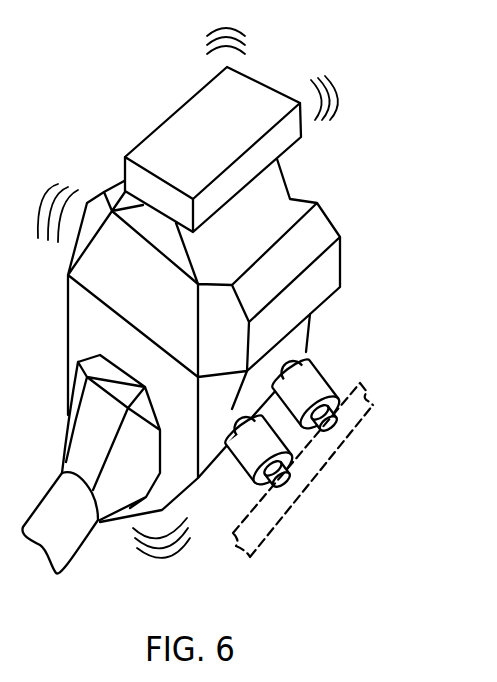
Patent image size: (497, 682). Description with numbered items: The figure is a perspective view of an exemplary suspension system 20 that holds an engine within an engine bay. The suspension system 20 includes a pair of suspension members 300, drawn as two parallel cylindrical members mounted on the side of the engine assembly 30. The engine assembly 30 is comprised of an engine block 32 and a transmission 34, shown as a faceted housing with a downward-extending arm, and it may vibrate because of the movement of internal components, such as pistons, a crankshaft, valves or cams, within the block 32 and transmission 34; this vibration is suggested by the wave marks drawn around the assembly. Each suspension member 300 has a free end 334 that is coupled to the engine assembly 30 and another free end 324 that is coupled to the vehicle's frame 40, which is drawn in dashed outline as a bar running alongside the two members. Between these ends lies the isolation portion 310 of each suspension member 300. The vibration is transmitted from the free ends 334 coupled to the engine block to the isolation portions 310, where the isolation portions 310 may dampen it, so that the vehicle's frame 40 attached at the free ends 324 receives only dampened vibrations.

The suspension system 20 is at (236, 313).
The engine assembly 30 is at (127, 108).
The engine block 32 is at (67, 320).
The transmission 34 is at (80, 547).
The vehicle's frame 40 is at (252, 558).
The suspension member 300 is at (297, 462).
The isolation portion 310 is at (334, 383).
The free end 324 is at (339, 446).
The free end 334 is at (306, 352).